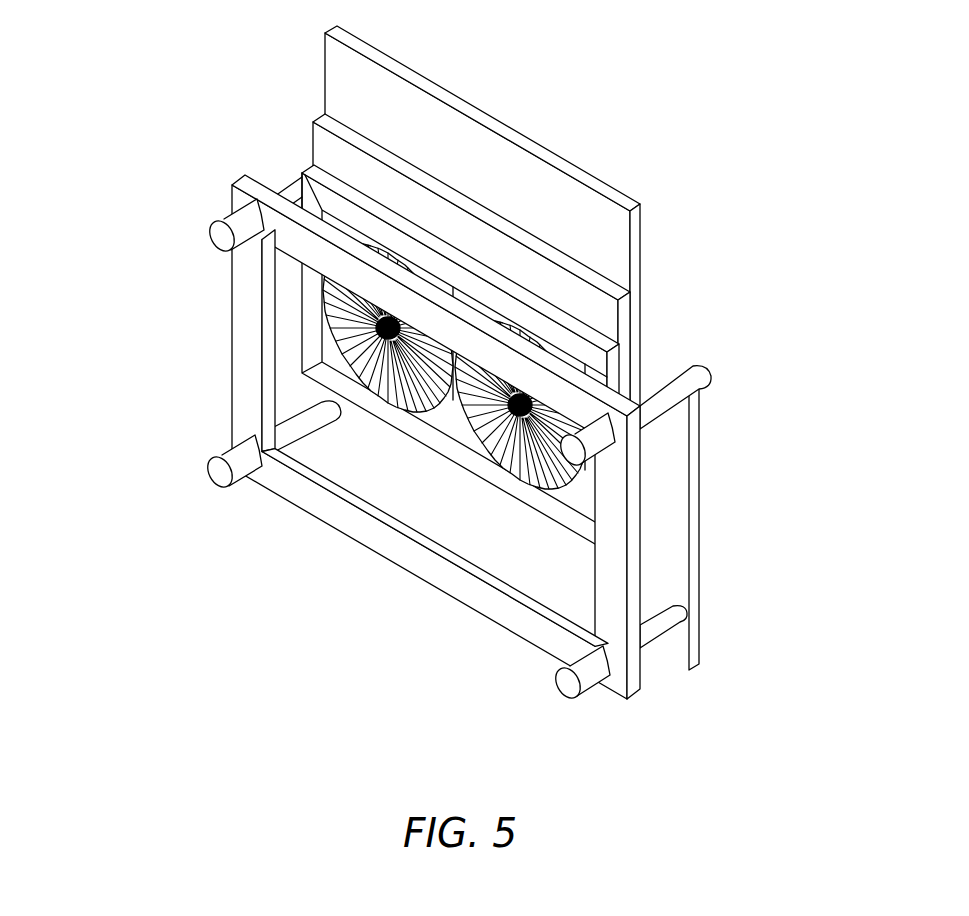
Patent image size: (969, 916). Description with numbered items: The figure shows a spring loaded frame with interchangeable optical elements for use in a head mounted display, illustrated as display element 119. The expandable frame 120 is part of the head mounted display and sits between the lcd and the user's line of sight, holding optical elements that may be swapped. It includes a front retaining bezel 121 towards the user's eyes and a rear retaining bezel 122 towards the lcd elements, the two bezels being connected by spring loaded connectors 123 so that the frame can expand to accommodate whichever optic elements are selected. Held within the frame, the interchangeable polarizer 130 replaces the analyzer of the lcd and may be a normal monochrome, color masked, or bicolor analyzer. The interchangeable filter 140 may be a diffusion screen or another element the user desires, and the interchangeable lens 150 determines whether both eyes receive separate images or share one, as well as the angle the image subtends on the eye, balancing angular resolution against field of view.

The display element 119 is at (112, 378).
The frame 120 is at (433, 570).
The front retaining bezel 121 is at (627, 667).
The rear retaining bezel 122 is at (693, 568).
The spring loaded connectors 123 is at (217, 238).
The interchangeable polarizer 130 is at (624, 216).
The interchangeable filter 140 is at (603, 310).
The interchangeable lens 150 is at (604, 358).